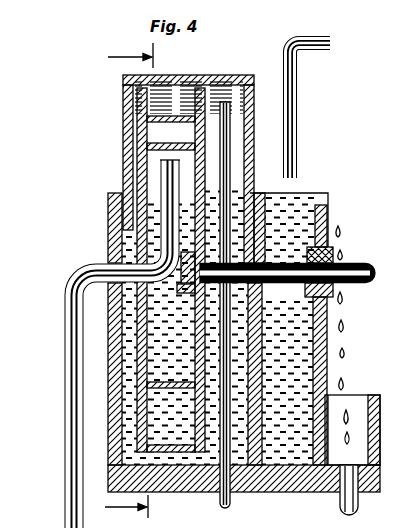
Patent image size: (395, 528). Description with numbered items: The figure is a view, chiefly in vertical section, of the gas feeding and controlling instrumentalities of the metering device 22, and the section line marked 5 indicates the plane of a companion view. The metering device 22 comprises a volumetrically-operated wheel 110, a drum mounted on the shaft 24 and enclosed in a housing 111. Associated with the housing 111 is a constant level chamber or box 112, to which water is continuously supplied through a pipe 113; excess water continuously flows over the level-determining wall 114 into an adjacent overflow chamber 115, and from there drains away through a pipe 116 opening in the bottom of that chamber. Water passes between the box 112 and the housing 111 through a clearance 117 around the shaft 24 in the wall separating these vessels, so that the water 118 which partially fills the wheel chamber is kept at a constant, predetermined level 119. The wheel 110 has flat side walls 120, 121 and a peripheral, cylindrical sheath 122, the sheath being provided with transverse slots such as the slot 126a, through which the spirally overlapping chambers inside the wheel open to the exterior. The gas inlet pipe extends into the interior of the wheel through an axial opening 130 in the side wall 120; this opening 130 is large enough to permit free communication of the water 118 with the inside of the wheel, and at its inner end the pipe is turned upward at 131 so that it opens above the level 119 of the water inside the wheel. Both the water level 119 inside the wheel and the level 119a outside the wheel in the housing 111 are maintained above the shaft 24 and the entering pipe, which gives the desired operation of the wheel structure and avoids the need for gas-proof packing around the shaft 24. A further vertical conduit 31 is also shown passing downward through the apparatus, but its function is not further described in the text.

The housing 111 is at (123, 87).
The transverse slot 126a is at (176, 100).
The metering device 22 is at (243, 64).
The pipe 113 is at (297, 90).
The side wall 121 is at (208, 164).
The volumetrically-operated wheel 110 is at (250, 158).
The water level outside the wheel 119a is at (233, 180).
The clearance 117 is at (265, 258).
The level-determining wall 114 is at (323, 213).
The shaft 24 is at (357, 264).
The water 118 is at (127, 333).
The constant level chamber 112 is at (290, 360).
The overflow chamber 115 is at (356, 394).
The drain pipe 116 is at (340, 504).
The vertical conduit 31 is at (231, 505).
The peripheral cylindrical sheath 122 is at (150, 436).
The side wall 120 is at (146, 147).
The water level 119 is at (120, 208).
The upturned inner end 131 is at (183, 247).
The axial opening 130 is at (147, 240).
The section line 5 is at (136, 282).